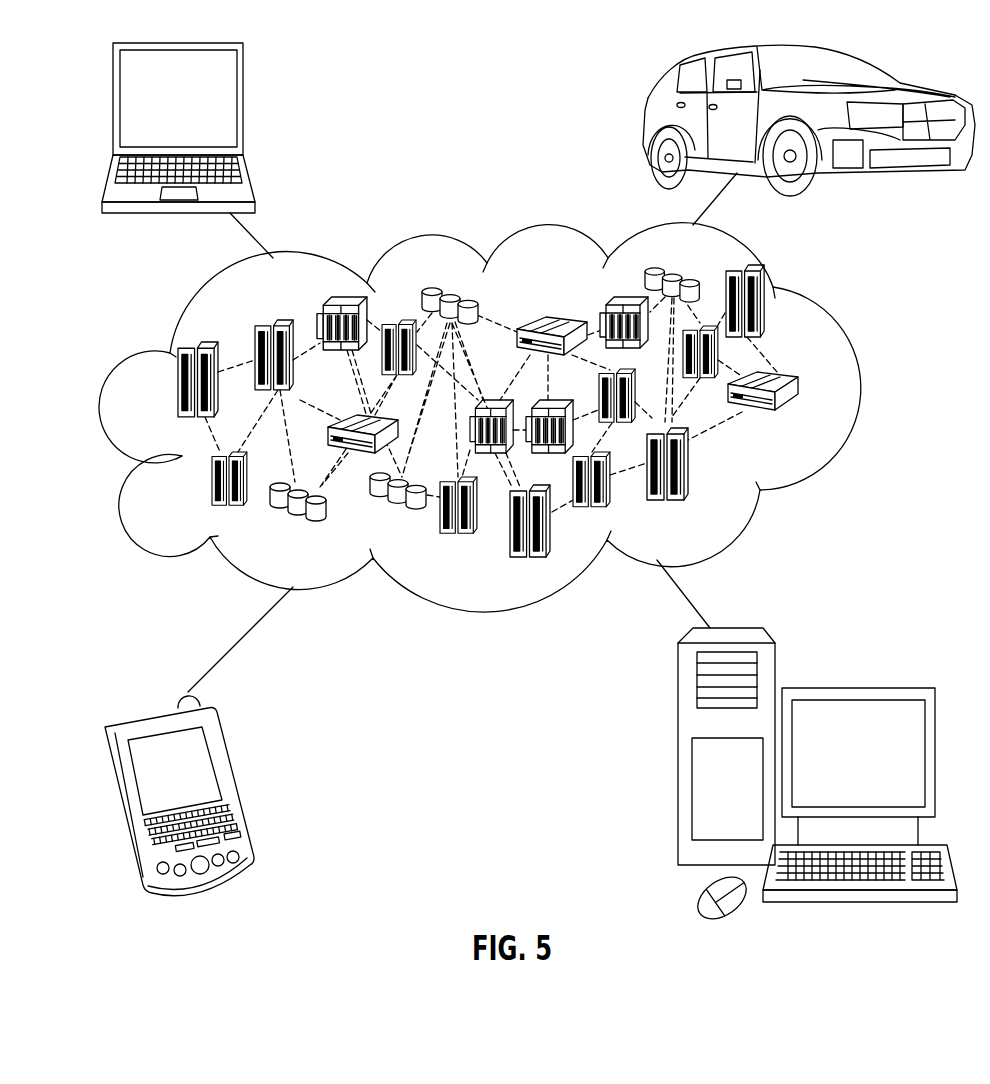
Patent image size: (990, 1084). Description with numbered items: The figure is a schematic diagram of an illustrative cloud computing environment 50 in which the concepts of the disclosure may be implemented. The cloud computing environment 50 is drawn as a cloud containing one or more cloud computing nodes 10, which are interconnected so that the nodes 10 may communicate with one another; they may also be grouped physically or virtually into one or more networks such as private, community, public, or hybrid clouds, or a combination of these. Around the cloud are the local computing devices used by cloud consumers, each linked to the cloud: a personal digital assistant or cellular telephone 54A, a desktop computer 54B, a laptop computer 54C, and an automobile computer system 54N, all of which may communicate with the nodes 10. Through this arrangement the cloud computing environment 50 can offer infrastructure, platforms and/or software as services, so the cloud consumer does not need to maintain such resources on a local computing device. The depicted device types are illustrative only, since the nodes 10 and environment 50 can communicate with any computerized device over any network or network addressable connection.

The cloud computing environment 50 is at (856, 389).
The cloud computing nodes 10 is at (813, 430).
The personal digital assistant (PDA) or cellular telephone 54A is at (233, 784).
The desktop computer 54B is at (853, 688).
The laptop computer 54C is at (243, 107).
The automobile computer system 54N is at (652, 122).